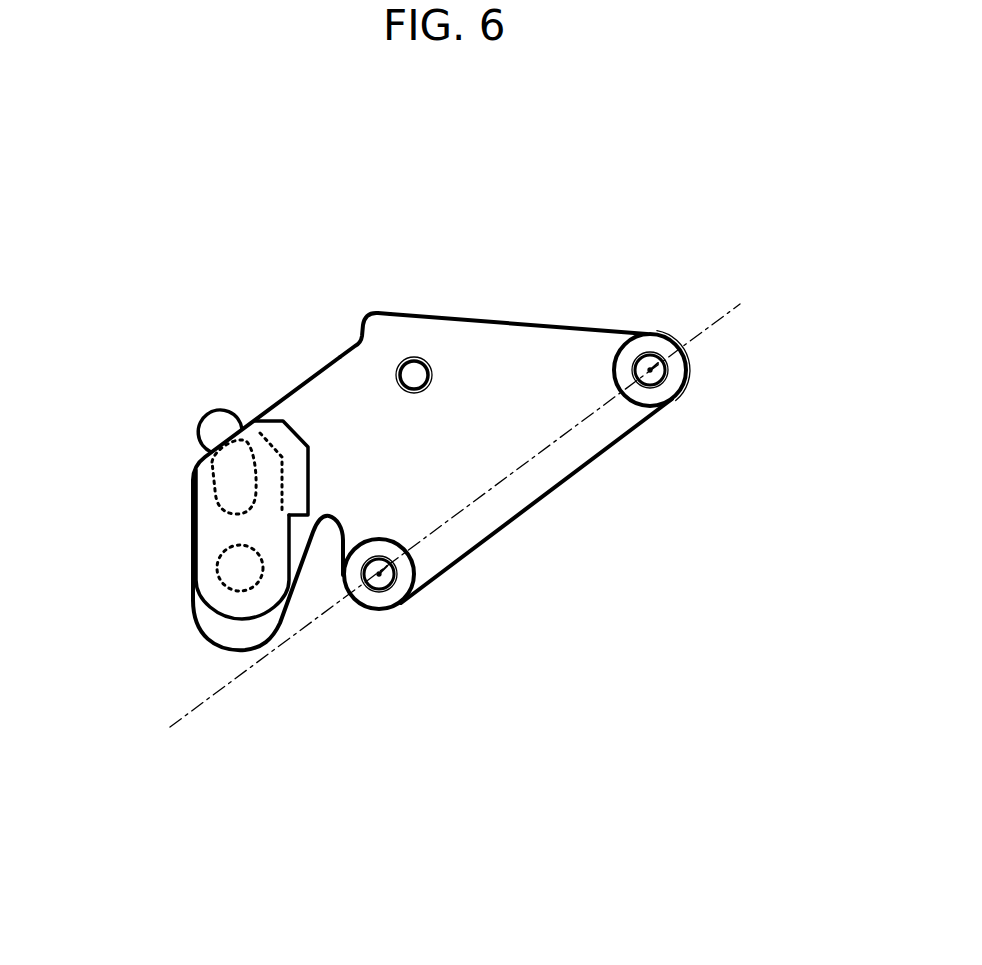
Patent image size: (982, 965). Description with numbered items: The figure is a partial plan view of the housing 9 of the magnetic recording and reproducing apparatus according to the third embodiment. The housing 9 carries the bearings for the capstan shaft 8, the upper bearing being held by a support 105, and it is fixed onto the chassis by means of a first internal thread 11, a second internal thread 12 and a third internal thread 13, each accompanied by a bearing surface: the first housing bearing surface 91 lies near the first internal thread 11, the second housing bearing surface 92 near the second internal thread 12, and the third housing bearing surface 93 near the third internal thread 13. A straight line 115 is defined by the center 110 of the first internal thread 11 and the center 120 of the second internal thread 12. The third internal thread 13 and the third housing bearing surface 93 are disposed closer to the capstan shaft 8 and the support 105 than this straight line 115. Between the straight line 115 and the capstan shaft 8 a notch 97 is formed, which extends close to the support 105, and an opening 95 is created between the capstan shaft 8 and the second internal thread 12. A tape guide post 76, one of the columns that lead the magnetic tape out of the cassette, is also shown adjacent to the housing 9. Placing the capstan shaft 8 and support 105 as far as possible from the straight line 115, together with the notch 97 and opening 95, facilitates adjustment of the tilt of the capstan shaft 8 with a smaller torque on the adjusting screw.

The housing 9 is at (335, 397).
The third housing bearing surface 93 is at (373, 332).
The opening 95 is at (320, 600).
The notch 97 is at (323, 550).
The support 105 is at (308, 464).
The tape guide post 76 is at (219, 432).
The capstan shaft 8 is at (217, 568).
The third internal thread 13 is at (422, 363).
The first internal thread 11 is at (646, 350).
The center of the first internal thread 110 is at (652, 369).
The first housing bearing surface 91 is at (692, 383).
The straight line 115 is at (533, 457).
The second housing bearing surface 92 is at (415, 565).
The second internal thread 12 is at (396, 586).
The center of the second internal thread 120 is at (378, 590).